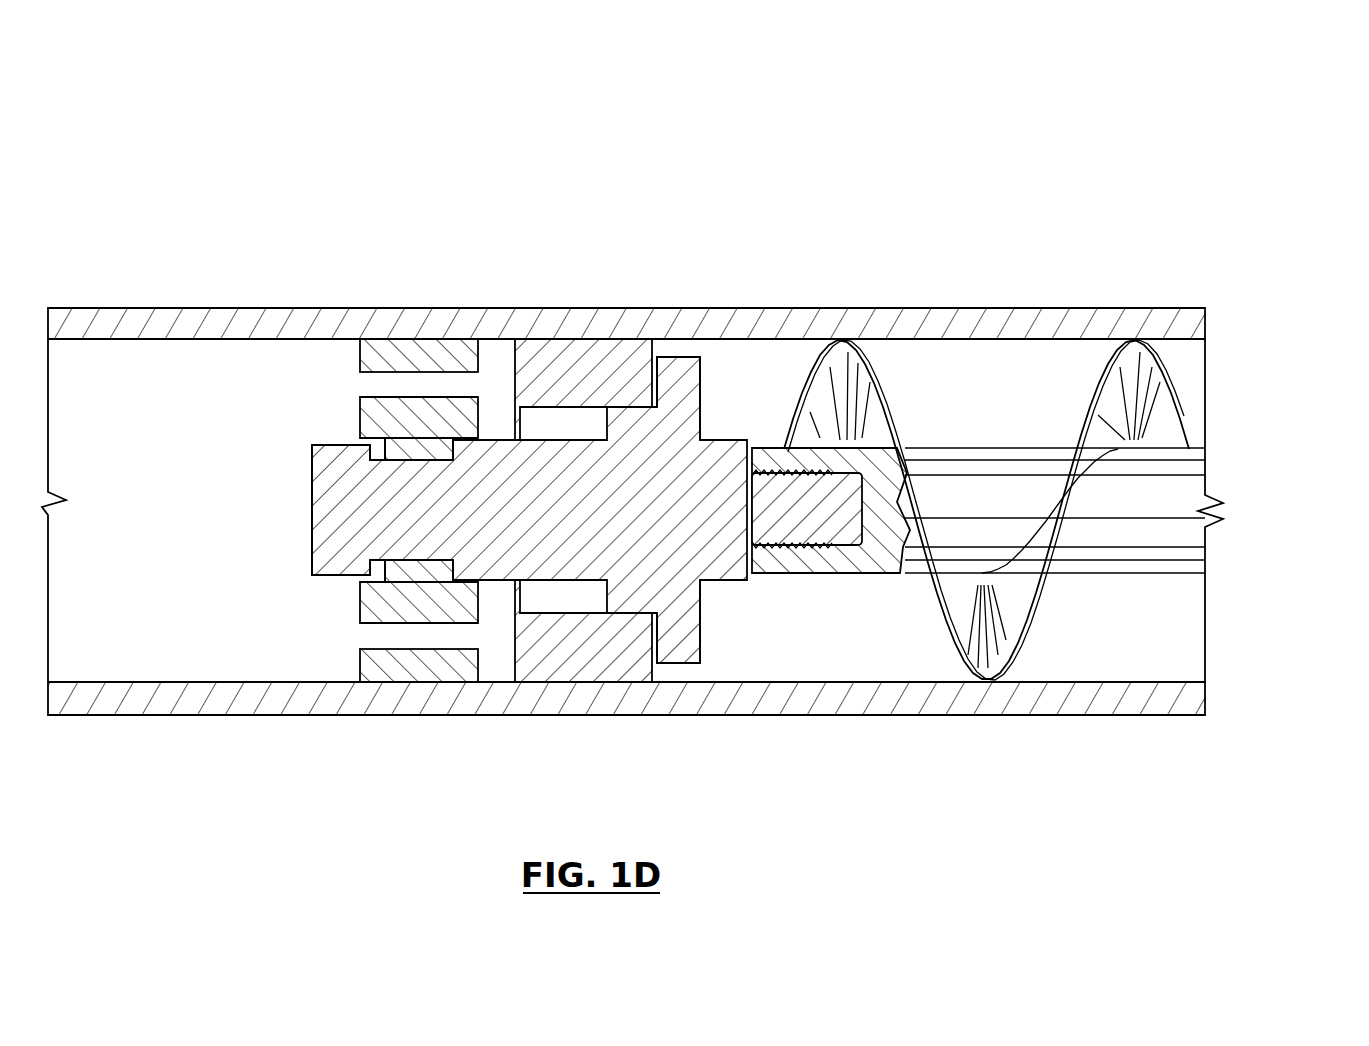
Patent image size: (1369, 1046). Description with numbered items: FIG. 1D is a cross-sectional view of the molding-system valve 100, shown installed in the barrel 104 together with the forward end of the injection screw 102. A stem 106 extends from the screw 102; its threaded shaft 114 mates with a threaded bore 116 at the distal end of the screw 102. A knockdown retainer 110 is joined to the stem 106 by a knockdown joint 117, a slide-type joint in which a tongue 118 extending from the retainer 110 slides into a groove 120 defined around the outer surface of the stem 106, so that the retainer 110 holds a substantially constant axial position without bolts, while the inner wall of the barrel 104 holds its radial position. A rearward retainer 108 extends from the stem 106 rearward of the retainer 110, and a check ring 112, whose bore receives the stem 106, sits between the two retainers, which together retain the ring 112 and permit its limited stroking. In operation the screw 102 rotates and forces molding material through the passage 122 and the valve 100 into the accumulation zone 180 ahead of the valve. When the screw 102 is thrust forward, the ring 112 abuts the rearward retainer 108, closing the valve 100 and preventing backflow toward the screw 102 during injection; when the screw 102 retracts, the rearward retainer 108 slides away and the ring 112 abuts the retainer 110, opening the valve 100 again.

The valve 100 is at (912, 158).
The injection screw 102 is at (1170, 540).
The barrel 104 is at (1086, 320).
The stem 106 is at (563, 482).
The rearward retainer 108 is at (684, 357).
The knockdown retainer 110 is at (379, 357).
The check ring 112 is at (580, 373).
The threaded shaft 114 is at (786, 450).
The threaded bore 116 is at (822, 484).
The knockdown joint 117 is at (307, 152).
The tongue 118 is at (428, 445).
The groove 120 is at (383, 458).
The passage 122 is at (412, 640).
The accumulation zone 180 is at (250, 435).